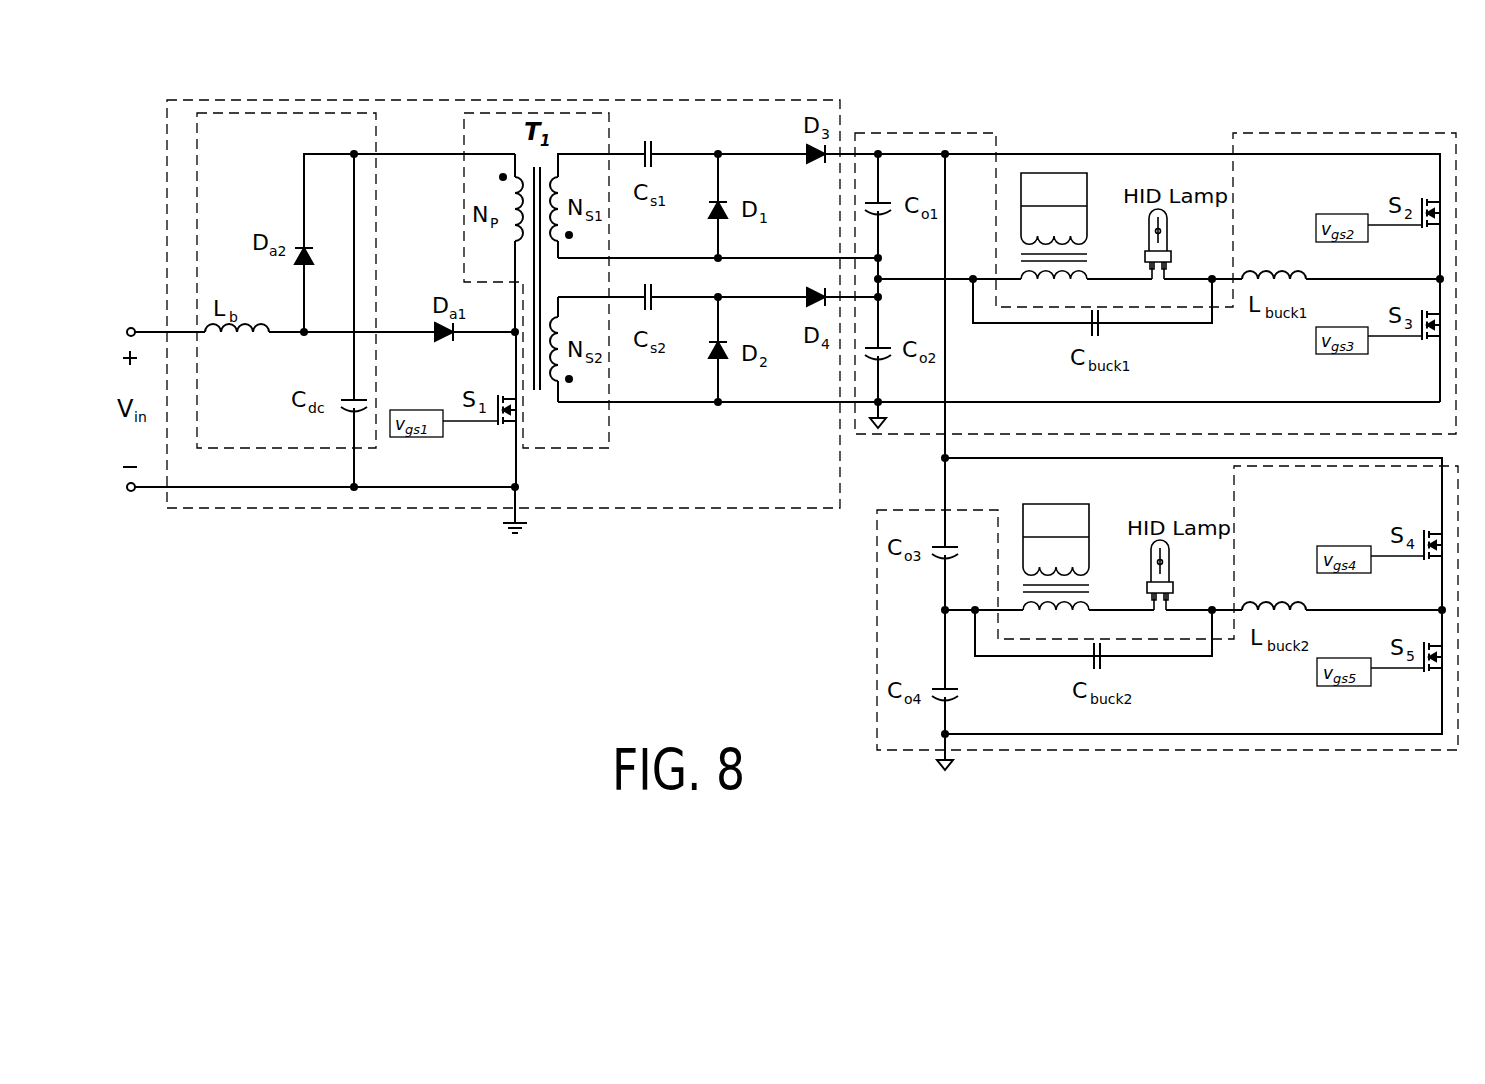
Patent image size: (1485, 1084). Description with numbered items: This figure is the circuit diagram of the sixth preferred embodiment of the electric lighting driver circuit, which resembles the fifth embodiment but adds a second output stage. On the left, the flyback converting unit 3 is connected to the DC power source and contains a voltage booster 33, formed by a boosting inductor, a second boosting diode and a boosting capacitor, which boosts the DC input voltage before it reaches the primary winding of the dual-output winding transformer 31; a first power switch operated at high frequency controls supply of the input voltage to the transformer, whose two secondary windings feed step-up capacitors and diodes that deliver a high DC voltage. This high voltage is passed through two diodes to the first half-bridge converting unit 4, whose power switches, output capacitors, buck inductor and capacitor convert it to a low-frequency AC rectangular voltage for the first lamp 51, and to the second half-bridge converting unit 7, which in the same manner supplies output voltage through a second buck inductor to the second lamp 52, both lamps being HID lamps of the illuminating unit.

The flyback converting unit 3 is at (438, 100).
The voltage booster 33 is at (288, 112).
The dual-output winding transformer 31 is at (565, 112).
The first half-bridge converting unit 4 is at (1350, 133).
The second half-bridge converting unit 7 is at (1207, 752).
The first lamp 51 is at (1150, 232).
The second lamp 52 is at (1152, 568).